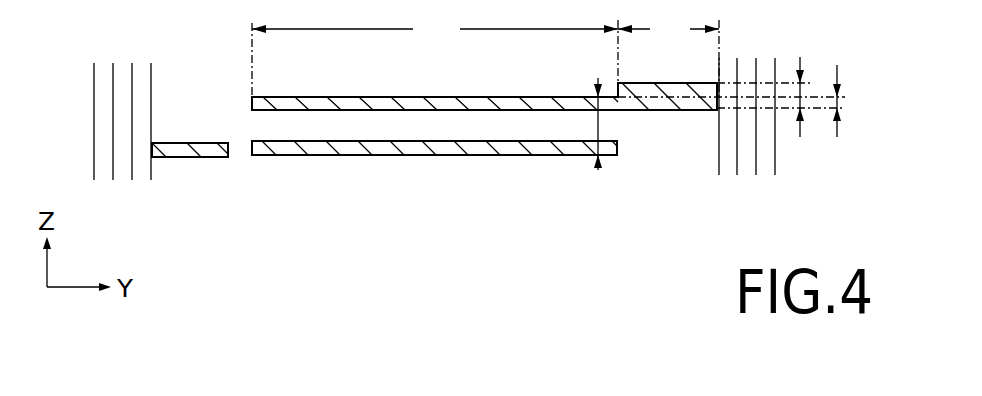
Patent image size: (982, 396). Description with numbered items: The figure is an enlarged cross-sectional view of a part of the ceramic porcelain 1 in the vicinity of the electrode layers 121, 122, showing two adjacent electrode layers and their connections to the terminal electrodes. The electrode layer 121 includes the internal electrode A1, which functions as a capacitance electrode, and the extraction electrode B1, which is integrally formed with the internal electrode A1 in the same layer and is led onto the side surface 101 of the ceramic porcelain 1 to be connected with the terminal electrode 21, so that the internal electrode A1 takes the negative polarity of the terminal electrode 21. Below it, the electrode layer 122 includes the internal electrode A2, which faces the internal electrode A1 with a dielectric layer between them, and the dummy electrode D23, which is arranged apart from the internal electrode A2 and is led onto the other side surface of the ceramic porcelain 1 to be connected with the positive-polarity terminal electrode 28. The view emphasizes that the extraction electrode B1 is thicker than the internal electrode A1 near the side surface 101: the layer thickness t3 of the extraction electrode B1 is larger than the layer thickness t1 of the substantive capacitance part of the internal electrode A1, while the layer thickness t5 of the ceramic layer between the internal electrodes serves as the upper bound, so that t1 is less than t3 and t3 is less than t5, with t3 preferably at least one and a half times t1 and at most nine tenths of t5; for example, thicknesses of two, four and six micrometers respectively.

The ceramic porcelain 1 is at (208, 100).
The terminal electrode 28 is at (100, 123).
The dummy electrode D23 is at (193, 150).
The electrode layer 121 is at (440, 115).
The electrode layer 122 is at (469, 161).
The internal electrode A2 is at (289, 147).
The internal electrode A1 is at (435, 31).
The extraction electrode B1 is at (668, 28).
The side surface 101 is at (718, 157).
The terminal electrode 21 is at (772, 158).
The layer thickness of the ceramic layer t5 is at (600, 123).
The layer thickness of the extraction electrode t3 is at (800, 90).
The layer thickness of the internal electrode t1 is at (838, 102).